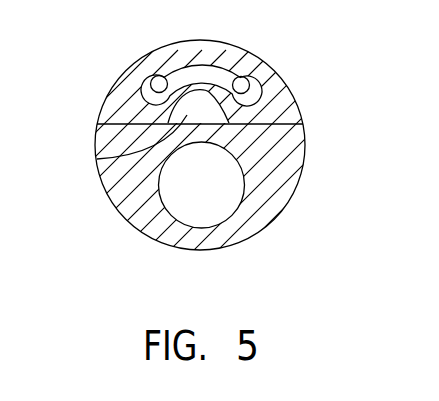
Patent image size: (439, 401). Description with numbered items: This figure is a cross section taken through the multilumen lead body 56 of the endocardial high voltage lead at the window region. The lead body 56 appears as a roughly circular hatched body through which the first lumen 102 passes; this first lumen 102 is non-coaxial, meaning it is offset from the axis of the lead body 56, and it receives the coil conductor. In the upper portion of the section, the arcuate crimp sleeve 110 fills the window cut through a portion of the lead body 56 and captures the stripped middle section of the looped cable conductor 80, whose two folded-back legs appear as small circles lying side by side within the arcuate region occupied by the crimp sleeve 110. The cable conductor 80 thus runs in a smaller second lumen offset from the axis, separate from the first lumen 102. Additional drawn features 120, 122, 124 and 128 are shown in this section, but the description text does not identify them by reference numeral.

The lead body 56 is at (284, 208).
The cable conductor 80 is at (159, 84).
The first lumen 102 is at (213, 213).
The arcuate crimp sleeve 110 is at (291, 90).
The arcuate channel 120 is at (140, 59).
The dividing line 122 is at (304, 123).
The body portion 124 is at (106, 99).
The arcuate boundary 128 is at (97, 159).